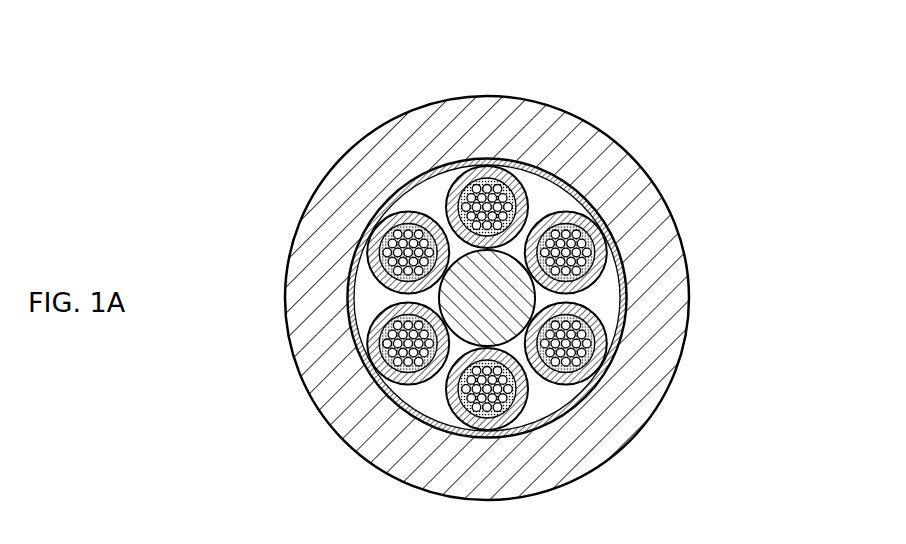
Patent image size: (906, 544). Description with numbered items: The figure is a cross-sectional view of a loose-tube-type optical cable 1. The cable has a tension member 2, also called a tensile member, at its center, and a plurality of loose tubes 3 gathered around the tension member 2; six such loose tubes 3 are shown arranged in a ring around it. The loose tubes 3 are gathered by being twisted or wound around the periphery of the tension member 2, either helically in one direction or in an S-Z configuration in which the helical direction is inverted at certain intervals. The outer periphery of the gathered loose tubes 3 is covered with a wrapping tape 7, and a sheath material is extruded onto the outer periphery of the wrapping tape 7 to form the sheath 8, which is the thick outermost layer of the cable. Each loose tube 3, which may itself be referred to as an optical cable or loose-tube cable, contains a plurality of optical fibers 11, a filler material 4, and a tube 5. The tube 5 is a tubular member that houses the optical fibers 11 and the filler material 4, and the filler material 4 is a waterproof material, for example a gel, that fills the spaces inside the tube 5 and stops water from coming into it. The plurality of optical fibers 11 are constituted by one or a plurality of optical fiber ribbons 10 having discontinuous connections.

The loose-tube-type optical cable 1 is at (300, 93).
The tension member 2 is at (585, 172).
The loose tube 3 is at (612, 306).
The filler material 4 is at (380, 336).
The tube 5 is at (369, 332).
The wrapping tape 7 is at (425, 185).
The sheath 8 is at (607, 167).
The optical fiber ribbon 10 is at (387, 343).
The optical fiber 11 is at (388, 357).